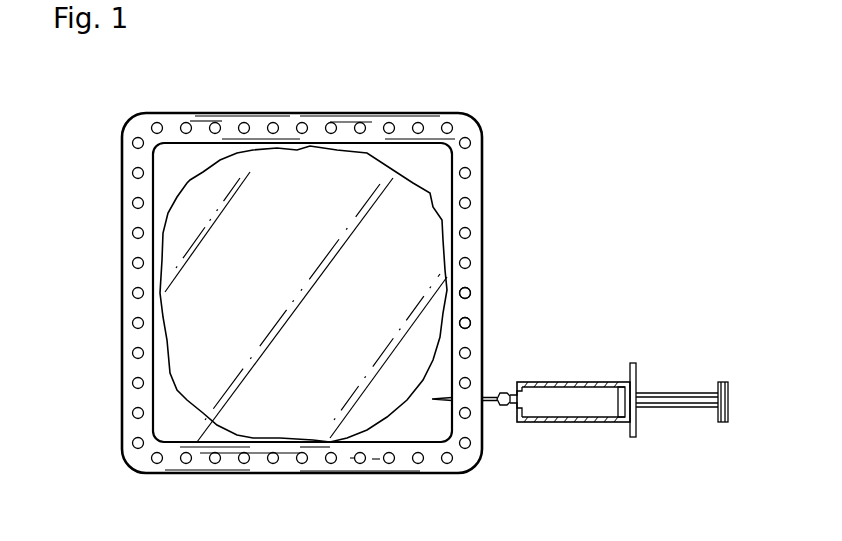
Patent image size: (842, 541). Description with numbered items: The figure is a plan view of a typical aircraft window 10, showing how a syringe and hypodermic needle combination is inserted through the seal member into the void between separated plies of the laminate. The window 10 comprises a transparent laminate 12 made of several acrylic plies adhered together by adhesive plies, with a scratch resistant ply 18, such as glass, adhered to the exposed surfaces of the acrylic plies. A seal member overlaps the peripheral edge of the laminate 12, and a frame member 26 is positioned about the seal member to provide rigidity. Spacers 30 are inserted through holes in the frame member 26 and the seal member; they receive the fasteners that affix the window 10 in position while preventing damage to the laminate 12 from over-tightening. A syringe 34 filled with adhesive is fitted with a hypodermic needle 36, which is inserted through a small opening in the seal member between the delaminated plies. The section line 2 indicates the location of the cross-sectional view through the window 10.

The aircraft window 10 is at (488, 180).
The transparent laminate 12 is at (286, 246).
The scratch resistant ply 18 is at (427, 257).
The frame member 26 is at (470, 284).
The spacers 30 is at (468, 294).
The syringe 34 is at (528, 424).
The hypodermic needle 36 is at (500, 392).
The section line 2- 2 is at (428, 398).